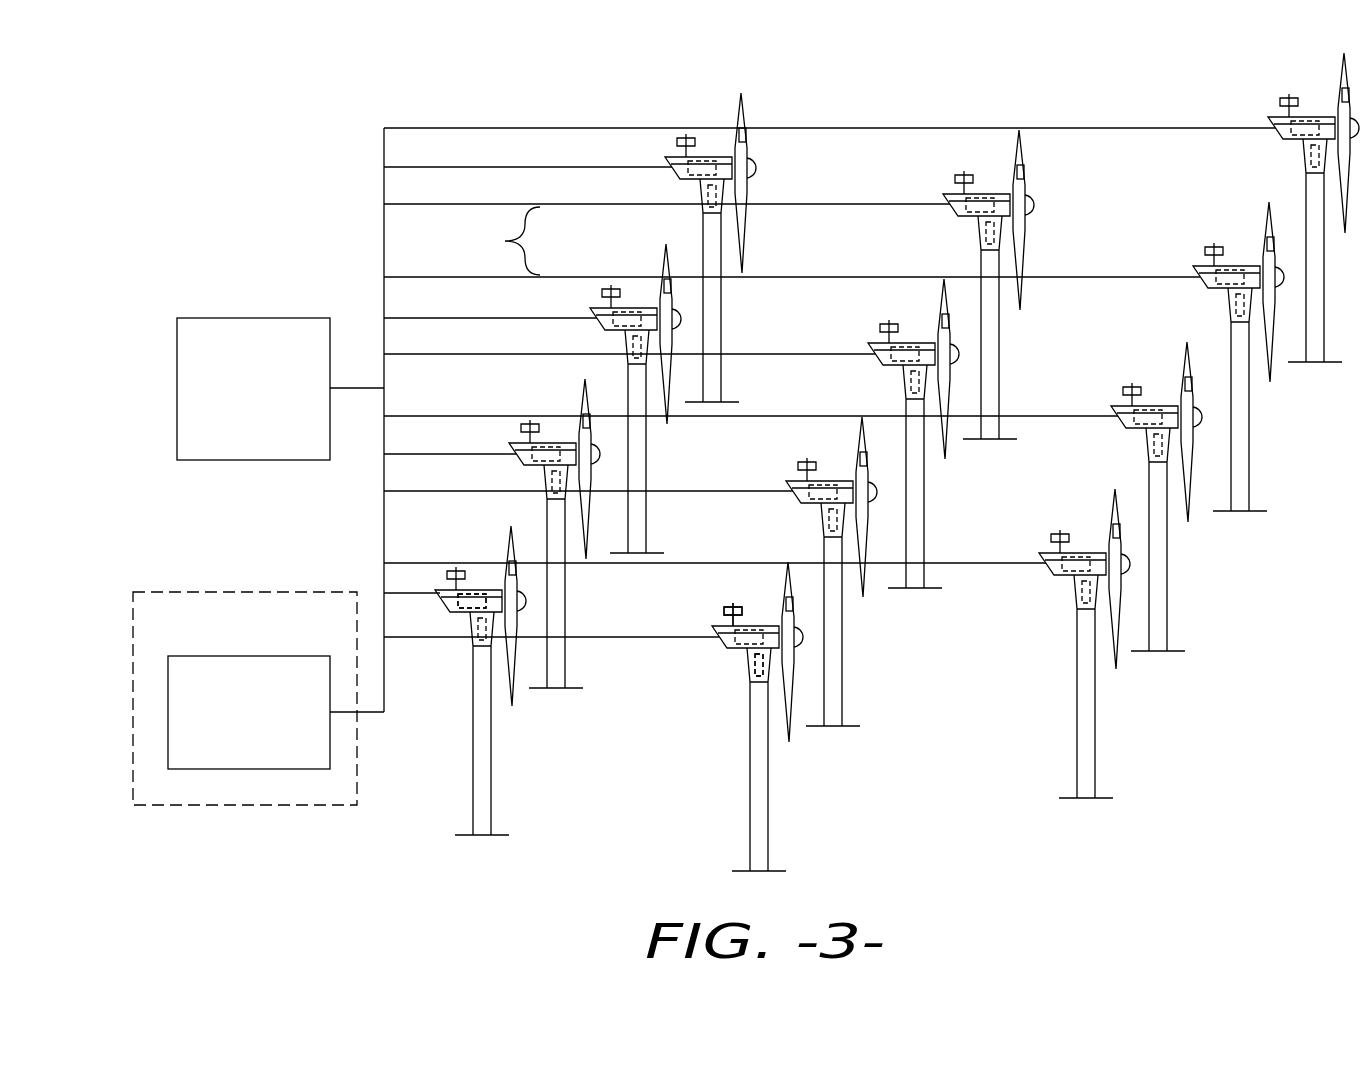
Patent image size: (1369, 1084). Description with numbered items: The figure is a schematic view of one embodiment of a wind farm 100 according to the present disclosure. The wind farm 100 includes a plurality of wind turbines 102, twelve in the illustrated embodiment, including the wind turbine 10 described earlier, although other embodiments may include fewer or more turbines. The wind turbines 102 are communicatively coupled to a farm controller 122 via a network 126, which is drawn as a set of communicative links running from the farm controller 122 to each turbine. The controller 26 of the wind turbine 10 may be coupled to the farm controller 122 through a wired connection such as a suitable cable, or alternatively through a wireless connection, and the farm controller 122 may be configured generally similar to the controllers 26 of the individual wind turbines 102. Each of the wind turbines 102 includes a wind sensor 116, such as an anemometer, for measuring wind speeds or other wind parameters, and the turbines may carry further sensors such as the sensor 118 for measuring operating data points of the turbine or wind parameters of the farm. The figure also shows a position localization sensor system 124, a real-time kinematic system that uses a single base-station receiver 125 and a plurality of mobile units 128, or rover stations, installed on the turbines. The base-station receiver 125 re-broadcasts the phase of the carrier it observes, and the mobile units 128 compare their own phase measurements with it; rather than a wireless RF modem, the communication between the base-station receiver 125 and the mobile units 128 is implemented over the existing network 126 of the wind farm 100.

The wind farm 100 is at (284, 202).
The wind turbine 10 is at (493, 765).
The wind turbines 102 is at (567, 622).
The mobile units 128 is at (509, 569).
The wind sensor 116 is at (727, 610).
The sensor 118 is at (752, 676).
The controller 26 is at (478, 594).
The network 126 is at (829, 420).
The farm controller 122 is at (277, 404).
The sensor system 124 is at (205, 590).
The base-station receiver 125 is at (228, 656).